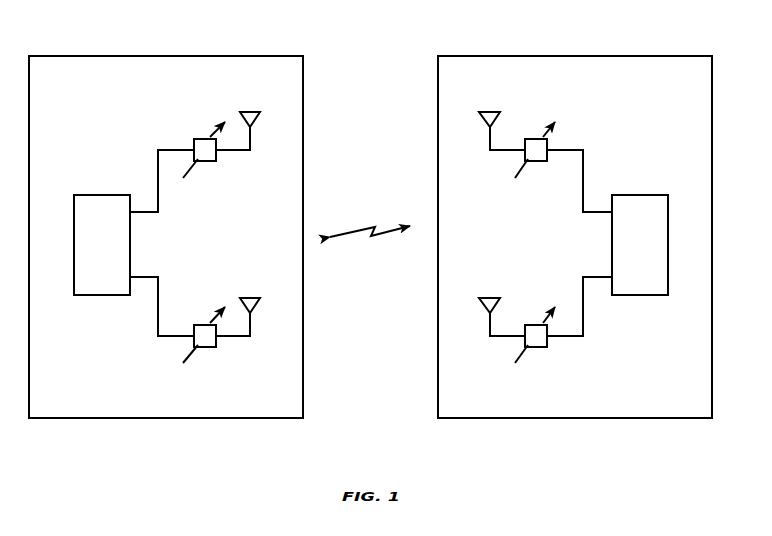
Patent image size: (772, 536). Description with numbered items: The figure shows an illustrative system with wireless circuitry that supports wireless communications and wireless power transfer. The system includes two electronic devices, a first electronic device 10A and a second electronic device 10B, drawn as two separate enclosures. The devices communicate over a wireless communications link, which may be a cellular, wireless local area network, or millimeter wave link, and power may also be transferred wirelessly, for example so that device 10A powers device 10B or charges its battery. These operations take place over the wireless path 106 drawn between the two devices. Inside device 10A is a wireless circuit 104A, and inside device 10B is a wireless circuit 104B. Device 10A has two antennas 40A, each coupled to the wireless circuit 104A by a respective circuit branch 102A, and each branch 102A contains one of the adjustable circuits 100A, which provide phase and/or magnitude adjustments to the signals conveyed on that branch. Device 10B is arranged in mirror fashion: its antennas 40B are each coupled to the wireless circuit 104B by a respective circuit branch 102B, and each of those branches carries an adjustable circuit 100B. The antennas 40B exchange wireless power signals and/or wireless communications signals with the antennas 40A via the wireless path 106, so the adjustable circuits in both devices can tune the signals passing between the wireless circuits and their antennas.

The electronic device 10A is at (220, 55).
The electronic device 10B is at (629, 55).
The antenna 40A is at (253, 110).
The antenna 40B is at (492, 110).
The adjustable circuit 100A is at (201, 138).
The adjustable circuit 100B is at (536, 138).
The circuit branch 102A is at (140, 140).
The circuit branch 102B is at (602, 140).
The wireless circuit 104A is at (97, 296).
The wireless circuit 104B is at (645, 297).
The wireless path 106 is at (377, 240).